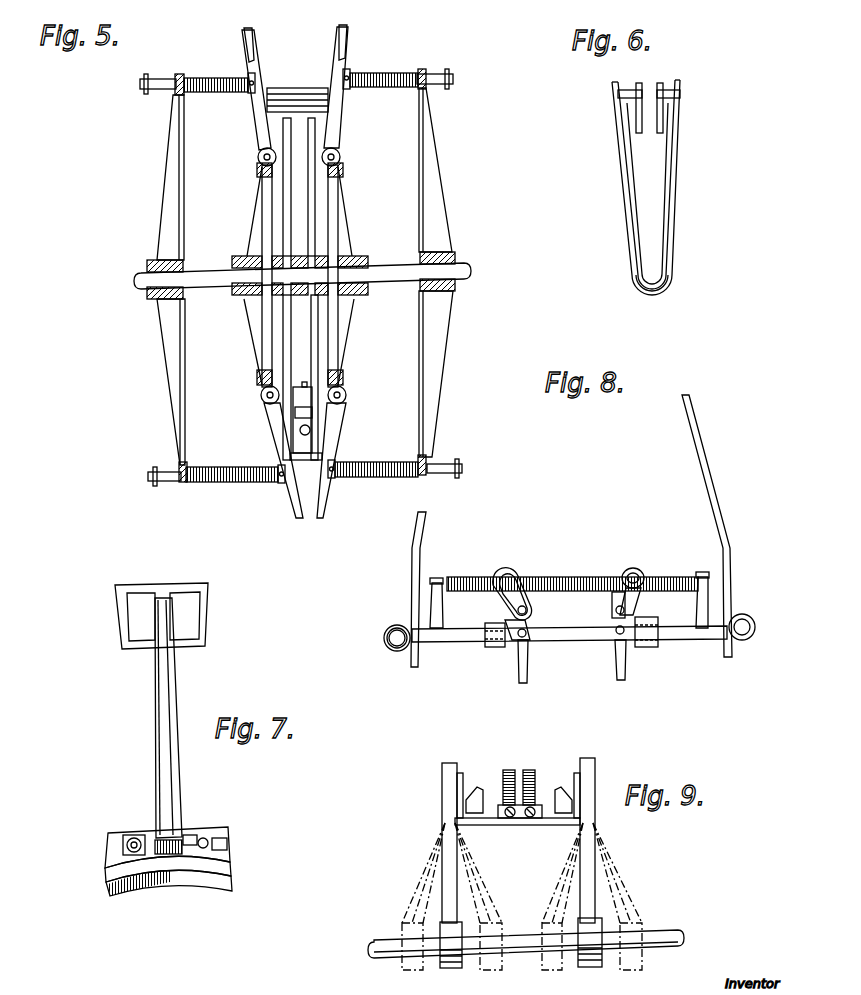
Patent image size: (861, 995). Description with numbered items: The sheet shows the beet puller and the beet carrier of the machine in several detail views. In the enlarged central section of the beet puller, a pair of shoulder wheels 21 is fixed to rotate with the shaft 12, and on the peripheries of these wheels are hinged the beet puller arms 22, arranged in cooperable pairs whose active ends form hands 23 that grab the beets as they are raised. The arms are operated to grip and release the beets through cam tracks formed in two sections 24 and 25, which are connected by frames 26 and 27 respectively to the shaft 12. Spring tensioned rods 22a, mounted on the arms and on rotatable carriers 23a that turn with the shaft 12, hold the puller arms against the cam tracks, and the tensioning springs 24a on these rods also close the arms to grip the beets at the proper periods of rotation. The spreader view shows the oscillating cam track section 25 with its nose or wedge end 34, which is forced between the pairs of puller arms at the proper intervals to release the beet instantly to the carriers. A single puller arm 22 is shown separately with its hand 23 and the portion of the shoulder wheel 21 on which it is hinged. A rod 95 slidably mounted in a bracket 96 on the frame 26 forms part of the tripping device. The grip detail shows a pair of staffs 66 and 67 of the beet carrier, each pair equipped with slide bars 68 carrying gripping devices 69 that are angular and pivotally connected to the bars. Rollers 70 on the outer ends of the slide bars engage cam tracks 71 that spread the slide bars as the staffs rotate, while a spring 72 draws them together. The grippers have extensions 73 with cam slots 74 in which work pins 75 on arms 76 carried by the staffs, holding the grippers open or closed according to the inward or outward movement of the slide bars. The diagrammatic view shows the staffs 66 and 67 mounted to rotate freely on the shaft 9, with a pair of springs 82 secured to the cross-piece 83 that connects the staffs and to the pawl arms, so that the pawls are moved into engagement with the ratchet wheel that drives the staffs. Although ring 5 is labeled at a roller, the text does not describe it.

In FIG. 8, the pivot ring 5 is at (392, 630).
In FIG. 9, the shaft 9 is at (660, 932).
In FIG. 5, the shaft 12 is at (466, 270).
In FIG. 5, the shoulder wheels 21 is at (257, 225).
In FIG. 7, the shoulder wheels 21 is at (213, 834).
In FIG. 5, the beet puller arms 22 is at (336, 132).
In FIG. 7, the beet puller arms 22 is at (176, 698).
In FIG. 5, the spring tensioned rods 22a is at (428, 80).
In FIG. 5, the hands 23 is at (350, 46).
In FIG. 7, the hands 23 is at (208, 612).
In FIG. 5, the rotatable carriers 23a is at (165, 175).
In FIG. 5, the cam track section 24 is at (283, 88).
In FIG. 5, the tensioning springs 24a is at (375, 76).
In FIG. 5, the cam track section 25 is at (322, 455).
In FIG. 6, the cam track section 25 is at (677, 186).
In FIG. 5, the frame 26 is at (316, 197).
In FIG. 6, the frame 27 is at (663, 125).
In FIG. 6, the wedge end 34 is at (655, 288).
In FIG. 8, the staff 66 is at (495, 650).
In FIG. 9, the staff 66 is at (455, 884).
In FIG. 8, the staff 67 is at (650, 650).
In FIG. 9, the staff 67 is at (593, 884).
In FIG. 8, the slide bars 68 is at (455, 640).
In FIG. 8, the gripping devices 69 is at (522, 684).
In FIG. 8, the rollers 70 is at (392, 650).
In FIG. 8, the cam tracks 71 is at (420, 535).
In FIG. 8, the spring 72 is at (572, 578).
In FIG. 8, the extensions 73 is at (640, 570).
In FIG. 8, the cam slots 74 is at (640, 600).
In FIG. 8, the pins 75 is at (615, 612).
In FIG. 8, the arms 76 is at (642, 614).
In FIG. 9, the springs 82 is at (530, 770).
In FIG. 9, the cross-piece 83 is at (552, 824).
In FIG. 5, the rod 95 is at (315, 428).
In FIG. 5, the bracket 96 is at (296, 410).